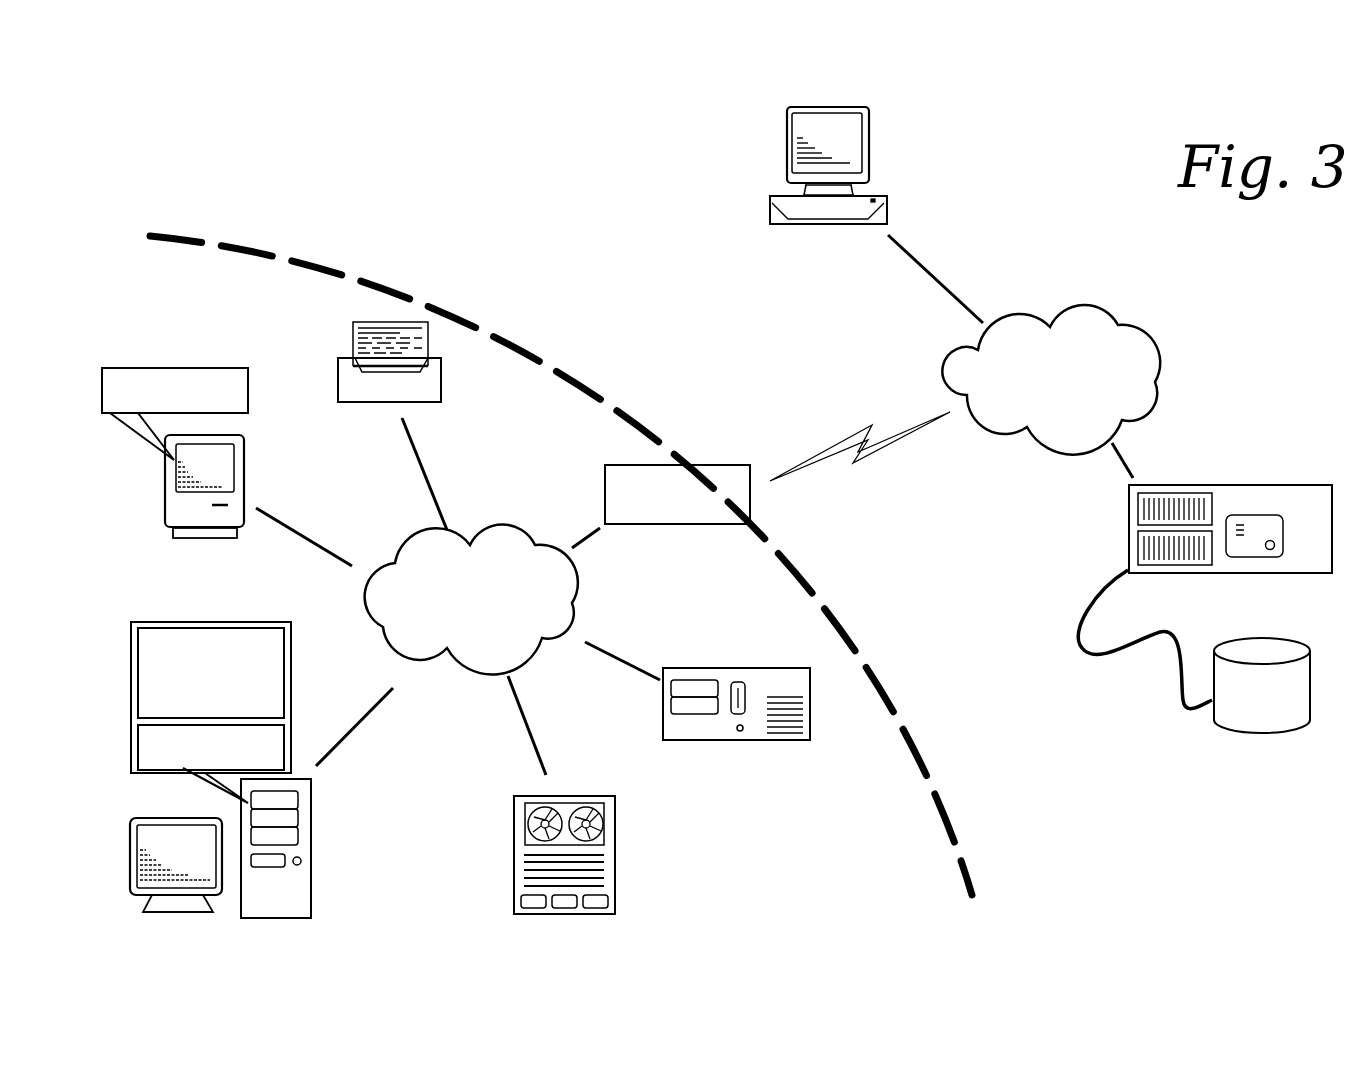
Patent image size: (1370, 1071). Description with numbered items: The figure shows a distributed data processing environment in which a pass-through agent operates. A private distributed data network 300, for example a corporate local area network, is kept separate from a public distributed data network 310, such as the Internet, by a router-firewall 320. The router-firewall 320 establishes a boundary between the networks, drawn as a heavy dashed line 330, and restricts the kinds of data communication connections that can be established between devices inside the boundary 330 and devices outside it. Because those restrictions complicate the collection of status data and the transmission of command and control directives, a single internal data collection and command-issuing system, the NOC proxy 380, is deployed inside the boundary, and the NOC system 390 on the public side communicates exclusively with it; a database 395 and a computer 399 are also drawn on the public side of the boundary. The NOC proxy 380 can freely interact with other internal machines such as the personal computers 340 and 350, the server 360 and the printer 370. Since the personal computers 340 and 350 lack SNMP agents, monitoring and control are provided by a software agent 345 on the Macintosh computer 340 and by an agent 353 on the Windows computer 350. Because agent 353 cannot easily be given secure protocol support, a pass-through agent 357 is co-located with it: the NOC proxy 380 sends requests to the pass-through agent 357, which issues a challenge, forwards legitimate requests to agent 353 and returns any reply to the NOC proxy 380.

The private distributed data network 300 is at (563, 627).
The public distributed data network 310 is at (1146, 407).
The router-firewall 320 is at (605, 468).
The boundary 330 is at (189, 232).
The personal computer 340 is at (166, 522).
The software agent 345 is at (153, 367).
The personal computer 350 is at (311, 908).
The agent 353 is at (130, 767).
The pass-through agent 357 is at (130, 713).
The server 360 is at (616, 887).
The printer 370 is at (442, 388).
The NOC proxy 380 is at (800, 740).
The NOC system 390 is at (1318, 573).
The database 395 is at (1301, 721).
The remote computer 399 is at (885, 192).